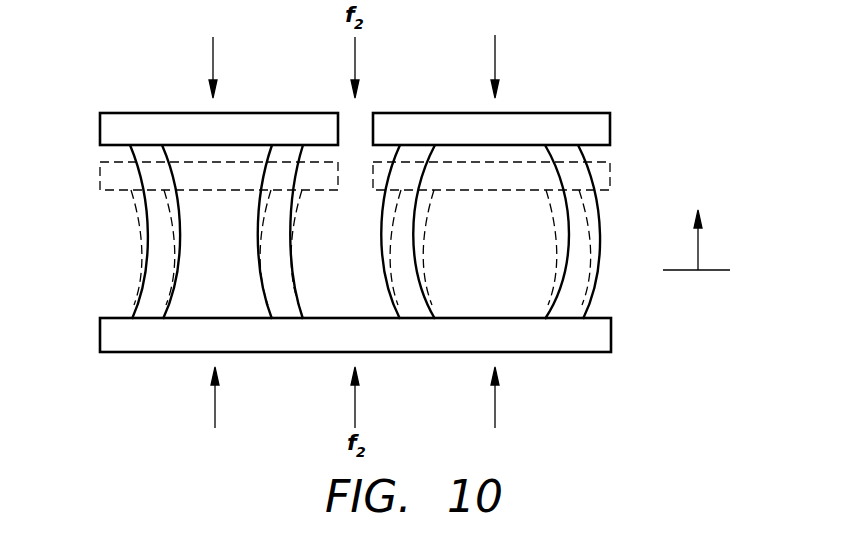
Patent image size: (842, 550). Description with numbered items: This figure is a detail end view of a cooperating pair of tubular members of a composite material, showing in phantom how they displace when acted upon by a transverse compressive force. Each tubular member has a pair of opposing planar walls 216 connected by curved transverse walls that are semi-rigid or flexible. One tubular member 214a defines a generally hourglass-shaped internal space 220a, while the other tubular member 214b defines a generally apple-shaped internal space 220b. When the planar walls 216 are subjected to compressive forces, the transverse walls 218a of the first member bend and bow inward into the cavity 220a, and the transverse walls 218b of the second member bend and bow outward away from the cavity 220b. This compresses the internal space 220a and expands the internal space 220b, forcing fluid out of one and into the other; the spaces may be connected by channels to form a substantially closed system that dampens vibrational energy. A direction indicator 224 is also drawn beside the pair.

The planar wall 216 is at (147, 113).
The tubular member 214a is at (146, 213).
The tubular member 214b is at (590, 175).
The transverse wall 218a is at (296, 212).
The transverse wall 218b is at (600, 255).
The internal space 220a is at (212, 278).
The internal space 220b is at (537, 282).
The direction of displacement 224 is at (698, 247).